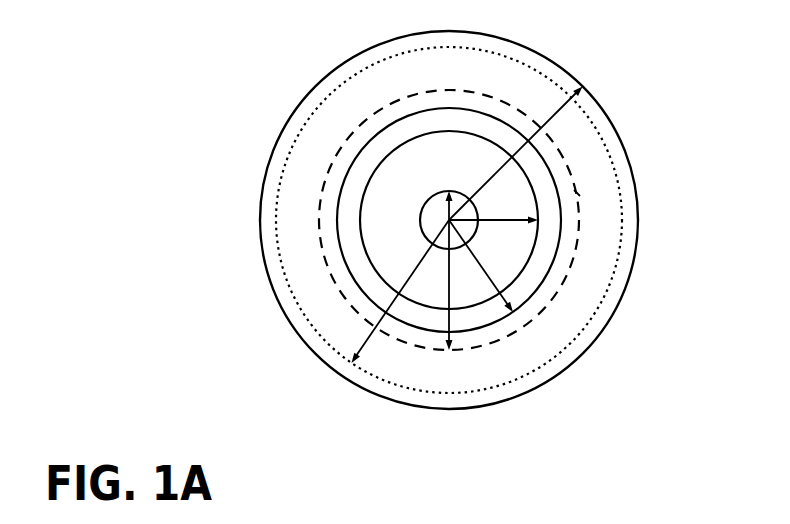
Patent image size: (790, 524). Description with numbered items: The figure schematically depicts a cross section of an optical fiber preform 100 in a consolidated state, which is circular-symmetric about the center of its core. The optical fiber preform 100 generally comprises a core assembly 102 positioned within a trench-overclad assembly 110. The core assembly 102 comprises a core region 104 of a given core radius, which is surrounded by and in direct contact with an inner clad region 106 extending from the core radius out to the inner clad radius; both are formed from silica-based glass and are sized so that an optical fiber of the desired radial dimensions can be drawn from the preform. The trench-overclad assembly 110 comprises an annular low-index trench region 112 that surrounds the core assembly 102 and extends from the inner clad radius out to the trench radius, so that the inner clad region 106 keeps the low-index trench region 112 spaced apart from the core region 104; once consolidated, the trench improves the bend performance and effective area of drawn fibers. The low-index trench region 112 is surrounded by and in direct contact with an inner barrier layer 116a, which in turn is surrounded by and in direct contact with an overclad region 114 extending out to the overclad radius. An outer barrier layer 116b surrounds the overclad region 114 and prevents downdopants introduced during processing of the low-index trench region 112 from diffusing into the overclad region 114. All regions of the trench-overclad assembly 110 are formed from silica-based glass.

The optical fiber preform 100 is at (282, 117).
The core assembly 102 is at (220, 323).
The core region 104 is at (420, 250).
The inner clad region 106 is at (378, 273).
The trench-overclad assembly 110 is at (737, 222).
The low-index trench region 112 is at (568, 175).
The overclad region 114 is at (638, 202).
The inner barrier layer 116a is at (613, 170).
The outer barrier layer 116b is at (632, 244).